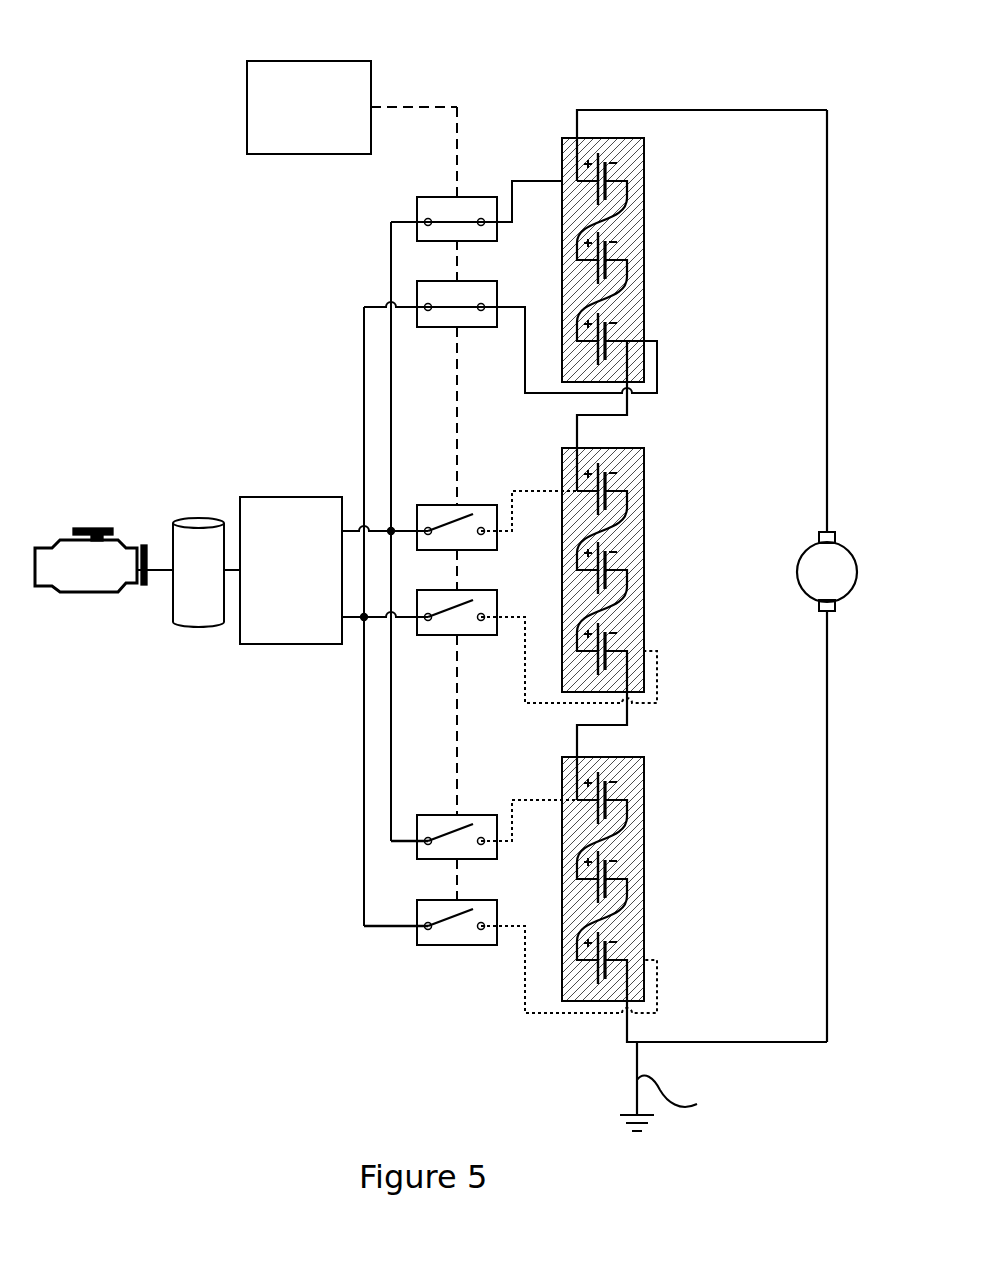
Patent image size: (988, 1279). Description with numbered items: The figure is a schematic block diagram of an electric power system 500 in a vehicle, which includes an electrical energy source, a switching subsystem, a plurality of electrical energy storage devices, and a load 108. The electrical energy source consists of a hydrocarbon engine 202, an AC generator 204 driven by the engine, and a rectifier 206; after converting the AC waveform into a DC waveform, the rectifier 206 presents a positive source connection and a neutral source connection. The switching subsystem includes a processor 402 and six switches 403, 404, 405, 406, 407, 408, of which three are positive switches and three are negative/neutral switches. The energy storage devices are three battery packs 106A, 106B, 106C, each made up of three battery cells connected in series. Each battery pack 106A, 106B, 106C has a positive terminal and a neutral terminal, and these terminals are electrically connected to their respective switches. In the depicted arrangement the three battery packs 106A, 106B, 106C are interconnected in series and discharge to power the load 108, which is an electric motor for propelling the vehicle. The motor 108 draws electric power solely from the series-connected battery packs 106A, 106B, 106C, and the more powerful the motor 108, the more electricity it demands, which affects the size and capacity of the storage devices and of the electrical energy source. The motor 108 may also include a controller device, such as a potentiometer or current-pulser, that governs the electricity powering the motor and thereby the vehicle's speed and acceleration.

The electric power system 500 is at (98, 78).
The processor 402 is at (325, 117).
The switch 403 is at (452, 219).
The switch 404 is at (452, 304).
The switch 405 is at (452, 528).
The switch 406 is at (452, 614).
The switch 407 is at (452, 838).
The switch 408 is at (452, 923).
The battery pack 106A is at (673, 138).
The battery pack 106B is at (673, 448).
The battery pack 106C is at (673, 757).
The load 108 is at (827, 576).
The hydrocarbon engine 202 is at (104, 580).
The AC generator 204 is at (214, 580).
The rectifier 206 is at (306, 584).